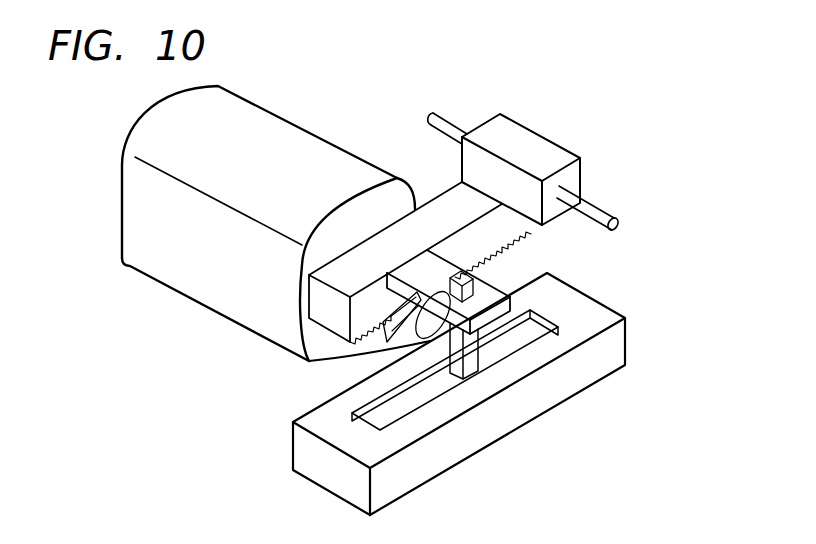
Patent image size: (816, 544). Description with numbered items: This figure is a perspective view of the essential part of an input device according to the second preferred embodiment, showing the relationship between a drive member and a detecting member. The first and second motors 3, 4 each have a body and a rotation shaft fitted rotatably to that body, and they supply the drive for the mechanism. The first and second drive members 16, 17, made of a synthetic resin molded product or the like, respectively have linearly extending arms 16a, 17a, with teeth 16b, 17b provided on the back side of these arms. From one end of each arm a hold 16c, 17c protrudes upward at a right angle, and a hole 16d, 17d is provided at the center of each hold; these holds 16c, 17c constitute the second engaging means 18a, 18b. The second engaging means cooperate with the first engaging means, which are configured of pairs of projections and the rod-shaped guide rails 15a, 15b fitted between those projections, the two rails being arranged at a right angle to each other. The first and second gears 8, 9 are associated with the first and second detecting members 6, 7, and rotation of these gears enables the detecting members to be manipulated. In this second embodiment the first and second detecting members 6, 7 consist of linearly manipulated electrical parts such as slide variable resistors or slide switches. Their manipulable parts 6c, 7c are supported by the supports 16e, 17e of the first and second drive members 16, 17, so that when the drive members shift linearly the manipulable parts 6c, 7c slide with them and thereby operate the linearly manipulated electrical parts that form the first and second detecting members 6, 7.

The first motor 3 is at (276, 188).
The second motor 4 is at (282, 105).
The first drive member 16 is at (296, 251).
The second drive member 17 is at (296, 251).
The arm 16a is at (223, 308).
The arm 17a is at (340, 275).
The teeth 16b is at (296, 333).
The teeth 17b is at (376, 328).
The hold 16c is at (585, 143).
The hold 17c is at (585, 143).
The hole 16d is at (625, 184).
The hole 17d is at (565, 184).
The support 16e is at (555, 292).
The support 17e is at (490, 288).
The second engaging means 18a is at (558, 117).
The second engaging means 18b is at (542, 130).
The guide rail 15a is at (652, 209).
The guide rail 15b is at (613, 213).
The first gear 8 is at (336, 373).
The second gear 9 is at (366, 339).
The first detecting member 6 is at (459, 399).
The second detecting member 7 is at (459, 399).
The manipulable part 6c is at (455, 418).
The manipulable part 7c is at (468, 357).